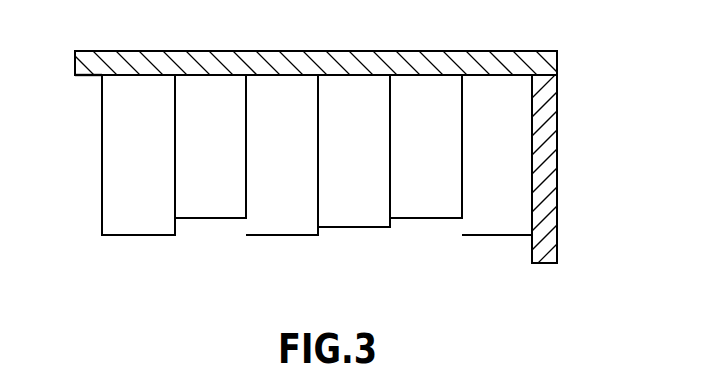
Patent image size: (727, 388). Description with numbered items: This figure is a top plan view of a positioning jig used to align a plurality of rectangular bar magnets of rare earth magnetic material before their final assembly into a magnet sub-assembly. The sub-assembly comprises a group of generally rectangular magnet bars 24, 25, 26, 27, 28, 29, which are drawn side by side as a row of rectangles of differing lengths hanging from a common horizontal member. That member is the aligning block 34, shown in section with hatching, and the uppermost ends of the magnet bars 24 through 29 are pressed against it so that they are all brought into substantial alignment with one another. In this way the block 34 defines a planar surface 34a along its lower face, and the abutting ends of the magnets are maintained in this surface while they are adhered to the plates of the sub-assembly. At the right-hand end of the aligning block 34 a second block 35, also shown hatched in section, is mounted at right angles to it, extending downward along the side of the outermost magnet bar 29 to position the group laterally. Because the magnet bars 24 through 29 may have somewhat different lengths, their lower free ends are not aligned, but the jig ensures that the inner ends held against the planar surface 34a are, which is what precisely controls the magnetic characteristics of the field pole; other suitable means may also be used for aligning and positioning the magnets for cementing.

The magnet bar 24 is at (151, 235).
The magnet bar 25 is at (213, 218).
The magnet bar 26 is at (290, 235).
The magnet bar 27 is at (364, 227).
The magnet bar 28 is at (431, 218).
The magnet bar 29 is at (503, 232).
The aligning block 34 is at (542, 51).
The planar surface 34a is at (89, 78).
The second block 35 is at (557, 202).